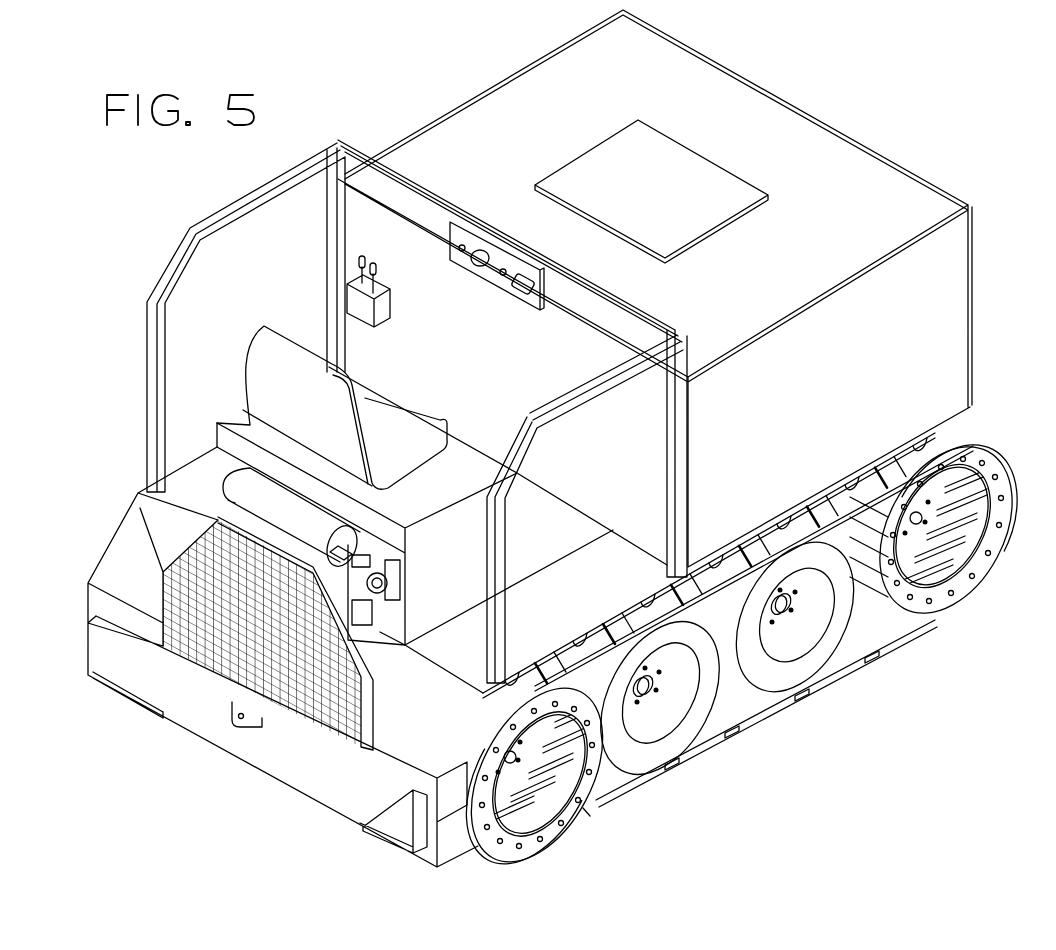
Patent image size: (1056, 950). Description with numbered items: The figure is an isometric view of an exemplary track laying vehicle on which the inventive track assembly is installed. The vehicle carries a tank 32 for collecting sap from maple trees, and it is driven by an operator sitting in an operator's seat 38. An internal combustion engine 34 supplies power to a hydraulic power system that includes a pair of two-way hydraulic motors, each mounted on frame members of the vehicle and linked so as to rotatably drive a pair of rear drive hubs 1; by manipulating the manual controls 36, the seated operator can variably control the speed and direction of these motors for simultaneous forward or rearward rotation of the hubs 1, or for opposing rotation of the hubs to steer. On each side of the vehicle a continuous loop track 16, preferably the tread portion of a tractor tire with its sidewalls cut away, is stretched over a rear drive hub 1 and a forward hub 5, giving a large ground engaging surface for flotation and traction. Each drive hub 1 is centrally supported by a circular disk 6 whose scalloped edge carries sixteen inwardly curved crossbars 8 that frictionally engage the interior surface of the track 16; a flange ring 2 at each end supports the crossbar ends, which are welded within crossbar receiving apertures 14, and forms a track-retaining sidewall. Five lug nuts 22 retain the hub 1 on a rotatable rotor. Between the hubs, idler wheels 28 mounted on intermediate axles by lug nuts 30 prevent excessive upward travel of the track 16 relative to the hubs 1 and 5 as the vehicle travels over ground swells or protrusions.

The rear drive hub 1 is at (596, 816).
The flange ring 2 is at (553, 827).
The forward hub 5 is at (972, 596).
The circular disk 6 is at (515, 788).
The crossbar 8 is at (553, 790).
The crossbar receiving aperture 14 is at (522, 742).
The continuous loop track 16 is at (697, 757).
The lug nut 22 is at (590, 770).
The idler wheel 28 is at (775, 677).
The lug nut 30 is at (793, 613).
The tank 32 is at (805, 233).
The internal combustion engine 34 is at (374, 605).
The manual controls 36 is at (352, 312).
The operator's seat 38 is at (298, 402).